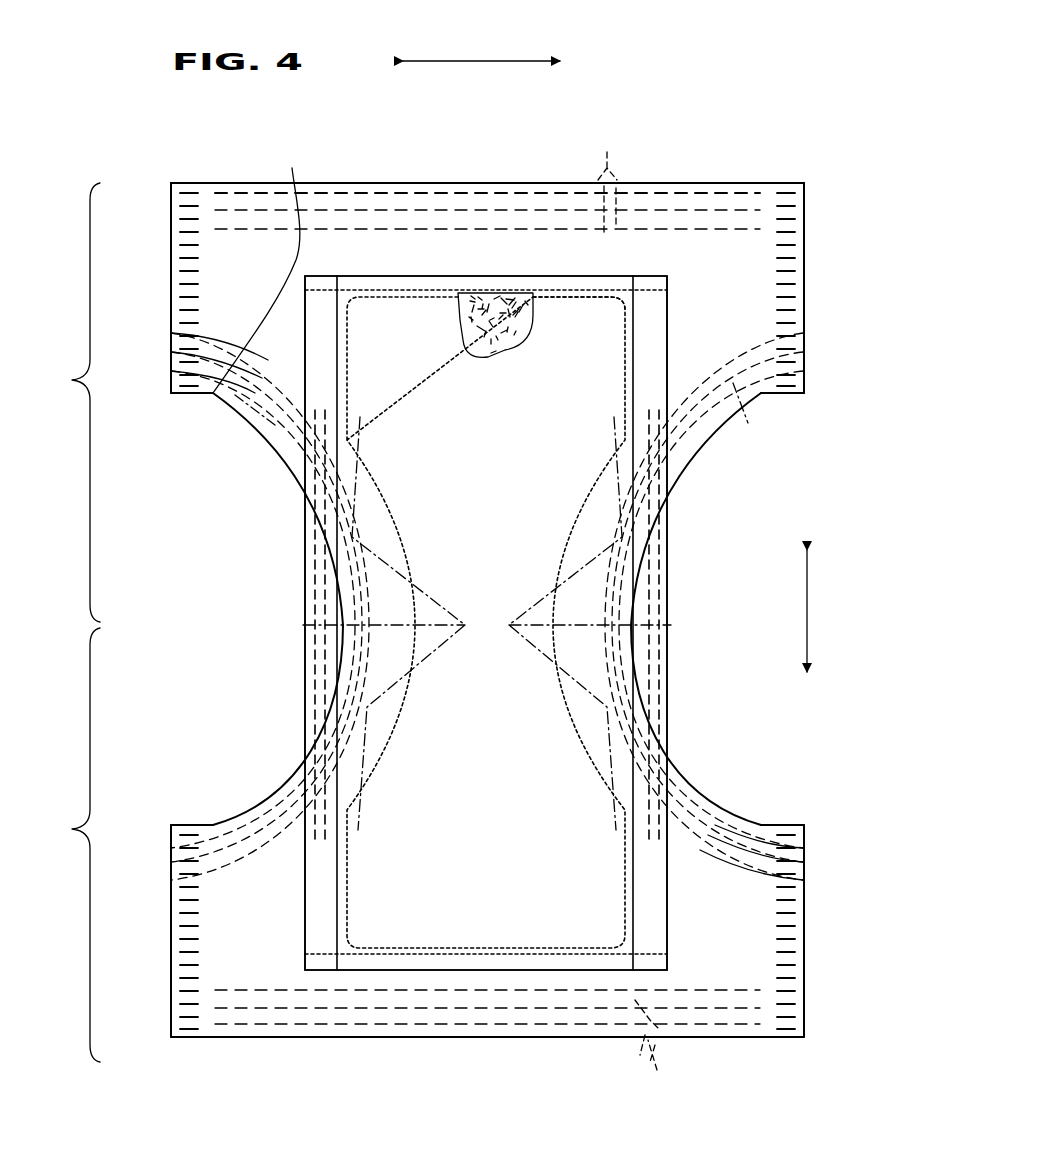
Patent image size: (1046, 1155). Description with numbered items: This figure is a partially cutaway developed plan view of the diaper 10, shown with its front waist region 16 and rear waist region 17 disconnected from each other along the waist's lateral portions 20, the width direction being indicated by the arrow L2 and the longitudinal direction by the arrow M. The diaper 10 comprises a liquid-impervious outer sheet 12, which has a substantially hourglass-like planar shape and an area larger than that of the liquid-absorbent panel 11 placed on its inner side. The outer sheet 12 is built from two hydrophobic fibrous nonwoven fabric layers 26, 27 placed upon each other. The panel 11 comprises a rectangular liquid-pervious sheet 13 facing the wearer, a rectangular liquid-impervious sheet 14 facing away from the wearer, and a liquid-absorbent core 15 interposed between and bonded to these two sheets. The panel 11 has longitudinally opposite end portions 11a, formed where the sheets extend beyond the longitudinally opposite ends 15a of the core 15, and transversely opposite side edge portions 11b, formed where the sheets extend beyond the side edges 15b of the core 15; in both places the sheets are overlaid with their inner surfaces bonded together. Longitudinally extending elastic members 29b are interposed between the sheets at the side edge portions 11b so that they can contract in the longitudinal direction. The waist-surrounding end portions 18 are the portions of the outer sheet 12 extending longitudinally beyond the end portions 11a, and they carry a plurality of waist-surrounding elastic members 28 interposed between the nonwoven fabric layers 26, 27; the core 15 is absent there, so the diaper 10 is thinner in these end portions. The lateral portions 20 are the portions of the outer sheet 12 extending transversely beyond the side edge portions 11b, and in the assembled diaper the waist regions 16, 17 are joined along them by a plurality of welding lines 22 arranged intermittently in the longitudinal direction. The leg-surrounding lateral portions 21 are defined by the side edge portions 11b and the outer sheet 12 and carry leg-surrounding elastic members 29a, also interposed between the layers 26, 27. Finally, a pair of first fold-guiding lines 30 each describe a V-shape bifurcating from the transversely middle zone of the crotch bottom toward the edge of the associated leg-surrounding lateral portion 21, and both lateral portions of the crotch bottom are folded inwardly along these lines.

The diaper 10 is at (773, 85).
The liquid-absorbent panel 11 is at (378, 312).
The longitudinally opposite end portions of the panel 11a is at (587, 313).
The transversely opposite side edge portions of the panel 11b is at (305, 530).
The liquid-impervious outer sheet 12 is at (755, 182).
The liquid-pervious sheet 13 is at (612, 287).
The liquid-impervious sheet 14 is at (530, 282).
The liquid-absorbent core 15 is at (483, 307).
The longitudinally opposite ends of the core 15a is at (508, 305).
The side edges of the core 15b is at (423, 608).
The front waist region 16 is at (60, 845).
The rear waist region 17 is at (60, 402).
The waist-surrounding end portions 18 is at (450, 257).
The transversely opposite lateral portions 20 is at (222, 265).
The leg-surrounding lateral portions 21 is at (385, 583).
The welding lines 22 is at (185, 206).
The hydrophobic fibrous nonwoven fabric layer 26 is at (258, 267).
The hydrophobic fibrous nonwoven fabric layer 27 is at (250, 255).
The waist-surrounding elastic members 28 is at (634, 613).
The leg-surrounding elastic members 29a is at (247, 420).
The elastic members 29b is at (360, 417).
The first fold-guiding lines 30 is at (340, 583).
The width direction L2 is at (483, 61).
The longitudinal direction M is at (812, 610).